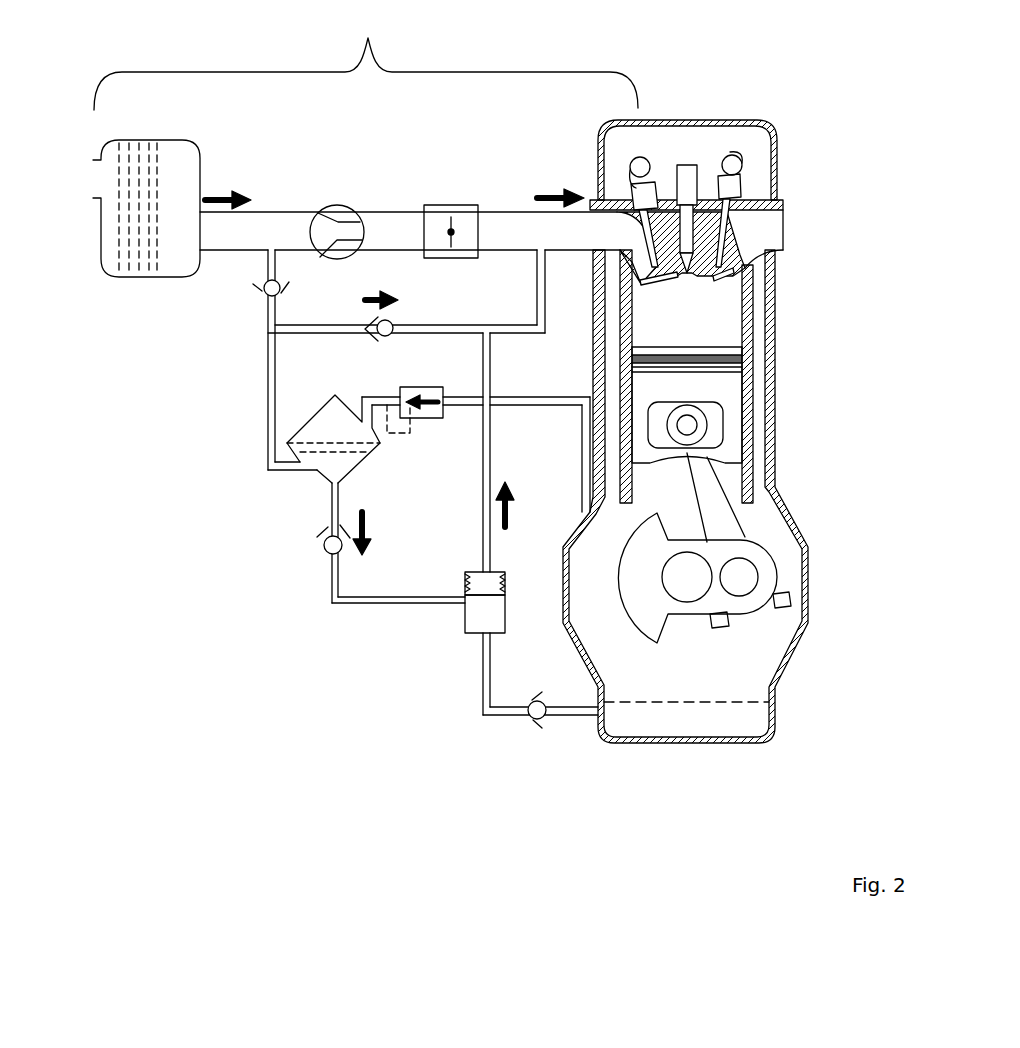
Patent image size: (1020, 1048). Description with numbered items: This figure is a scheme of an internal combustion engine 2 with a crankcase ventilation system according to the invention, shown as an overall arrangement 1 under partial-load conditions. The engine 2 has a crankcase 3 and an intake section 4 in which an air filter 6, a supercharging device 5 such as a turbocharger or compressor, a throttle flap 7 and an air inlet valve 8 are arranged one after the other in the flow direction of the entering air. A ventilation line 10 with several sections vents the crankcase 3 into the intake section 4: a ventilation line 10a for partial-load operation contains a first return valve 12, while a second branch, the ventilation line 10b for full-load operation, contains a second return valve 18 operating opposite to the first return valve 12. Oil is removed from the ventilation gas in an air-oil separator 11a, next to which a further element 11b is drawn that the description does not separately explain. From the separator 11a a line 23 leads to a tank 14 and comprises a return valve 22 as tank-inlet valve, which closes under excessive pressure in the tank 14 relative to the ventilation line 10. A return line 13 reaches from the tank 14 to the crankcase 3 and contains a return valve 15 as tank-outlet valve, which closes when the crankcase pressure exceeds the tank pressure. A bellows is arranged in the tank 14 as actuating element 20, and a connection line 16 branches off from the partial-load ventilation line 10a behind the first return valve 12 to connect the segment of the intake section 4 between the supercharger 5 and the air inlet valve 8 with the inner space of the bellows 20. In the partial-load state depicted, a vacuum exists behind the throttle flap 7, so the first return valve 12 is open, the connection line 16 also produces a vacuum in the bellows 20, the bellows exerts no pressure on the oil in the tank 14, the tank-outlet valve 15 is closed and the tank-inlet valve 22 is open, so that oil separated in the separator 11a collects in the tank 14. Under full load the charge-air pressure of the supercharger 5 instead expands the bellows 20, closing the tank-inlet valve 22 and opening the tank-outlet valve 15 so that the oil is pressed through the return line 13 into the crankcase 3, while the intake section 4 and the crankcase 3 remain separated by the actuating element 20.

The internal combustion engine arrangement 1 is at (200, 530).
The internal combustion engine 2 is at (768, 372).
The crankcase 3 is at (780, 520).
The intake section 4 is at (366, 60).
The supercharging device 5 is at (338, 222).
The air filter 6 is at (152, 260).
The throttle flap 7 is at (442, 218).
The air inlet valve 8 is at (633, 197).
The ventilation line 10 is at (275, 445).
The ventilation line for partial-load operation 10a is at (298, 330).
The ventilation line for full-load operation 10b is at (277, 312).
The air-oil separator 11a is at (330, 462).
The check valve 11b is at (413, 418).
The first return valve 12 is at (393, 322).
The return line 13 is at (577, 710).
The tank 14 is at (488, 613).
The tank-outlet valve 15 is at (530, 715).
The connection line 16 is at (490, 370).
The second return valve 18 is at (263, 291).
The actuating element 20 is at (483, 583).
The tank-inlet valve 22 is at (325, 553).
The line leading to the tank 23 is at (338, 503).